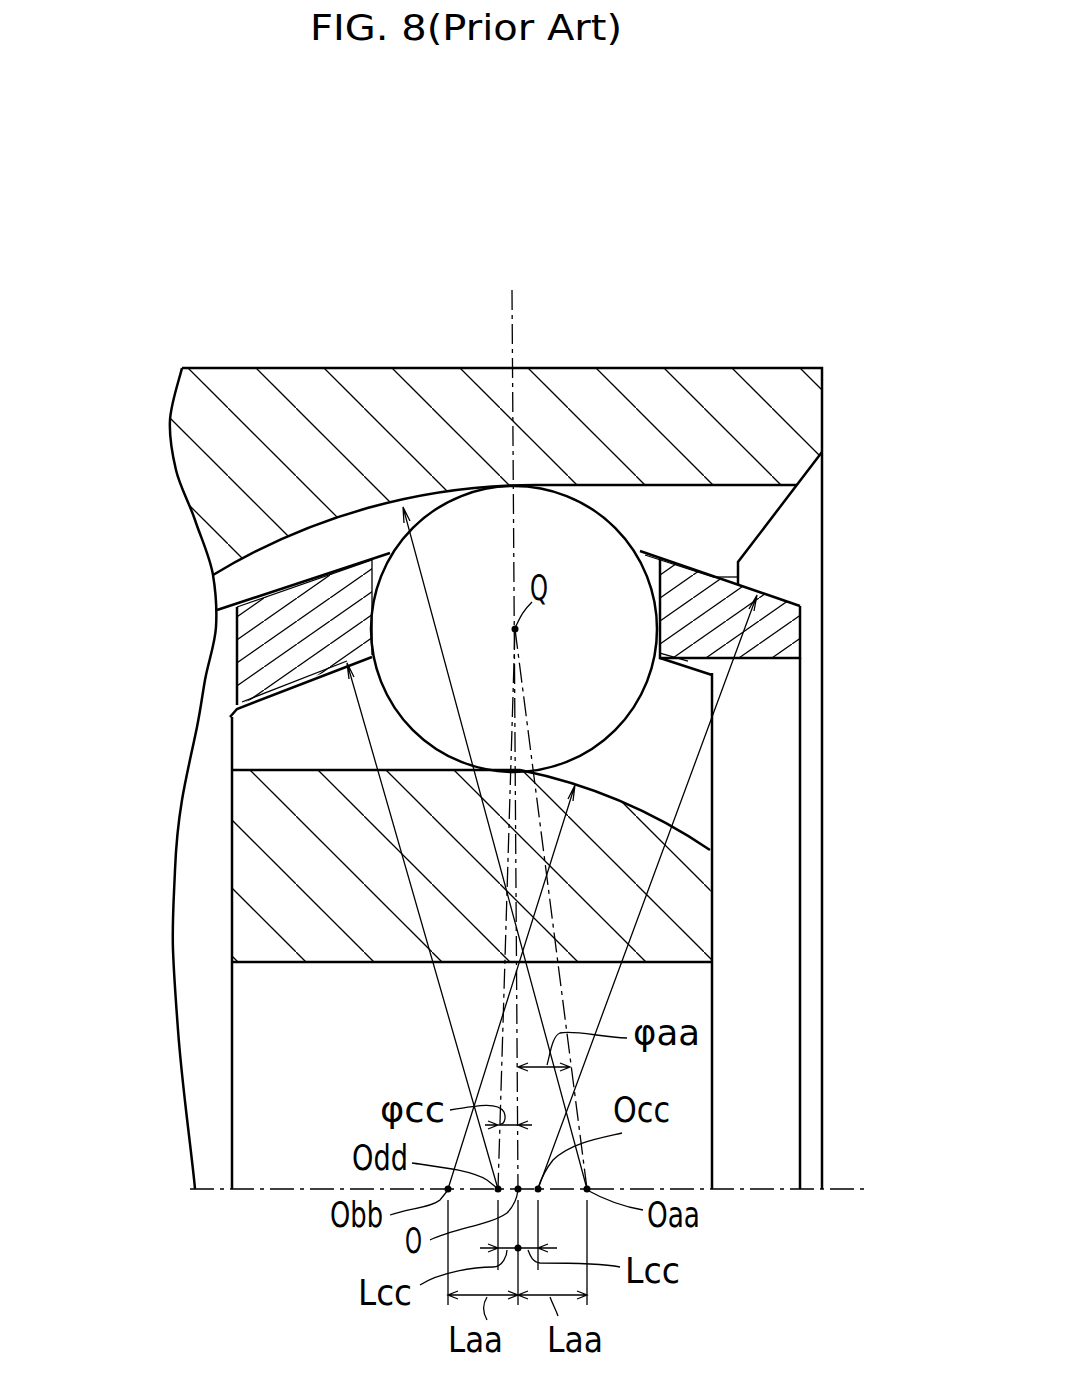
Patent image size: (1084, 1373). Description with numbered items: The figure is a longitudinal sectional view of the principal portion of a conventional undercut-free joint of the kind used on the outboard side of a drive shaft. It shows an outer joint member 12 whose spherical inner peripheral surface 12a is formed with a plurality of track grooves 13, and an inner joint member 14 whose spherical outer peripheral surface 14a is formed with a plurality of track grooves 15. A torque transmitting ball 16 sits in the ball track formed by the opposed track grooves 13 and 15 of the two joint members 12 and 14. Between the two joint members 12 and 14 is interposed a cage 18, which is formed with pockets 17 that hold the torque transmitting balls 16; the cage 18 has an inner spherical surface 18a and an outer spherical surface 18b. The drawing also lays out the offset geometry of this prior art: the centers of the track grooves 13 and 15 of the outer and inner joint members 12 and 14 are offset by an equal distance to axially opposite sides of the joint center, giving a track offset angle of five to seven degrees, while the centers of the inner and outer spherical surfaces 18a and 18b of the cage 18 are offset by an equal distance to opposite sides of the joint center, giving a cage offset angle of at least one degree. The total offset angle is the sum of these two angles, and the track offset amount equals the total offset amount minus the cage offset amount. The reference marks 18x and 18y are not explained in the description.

The outer joint member 12 is at (210, 432).
The spherical inner peripheral surface 12a is at (318, 577).
The track grooves 13 is at (331, 500).
The torque transmitting balls 16 is at (470, 527).
The pockets 17 is at (660, 547).
The spherical outer peripheral surface 14a is at (310, 667).
The outer spherical surface of the cage 18b is at (253, 707).
The seal lip 18y is at (280, 690).
The inner joint member 14 is at (270, 890).
The track grooves 15 is at (690, 842).
The cage 18 is at (772, 627).
The inner spherical surface of the cage 18a is at (778, 612).
The seal lip 18x is at (790, 660).